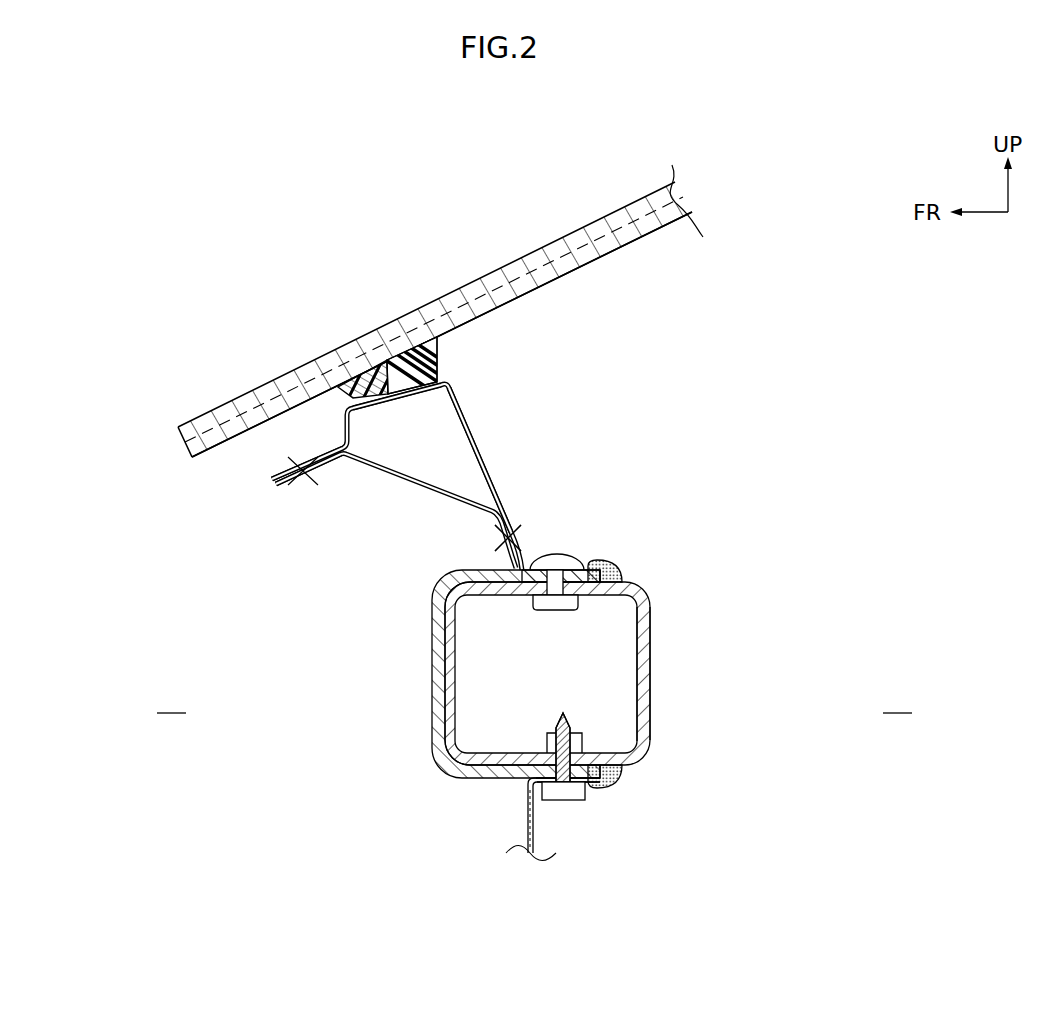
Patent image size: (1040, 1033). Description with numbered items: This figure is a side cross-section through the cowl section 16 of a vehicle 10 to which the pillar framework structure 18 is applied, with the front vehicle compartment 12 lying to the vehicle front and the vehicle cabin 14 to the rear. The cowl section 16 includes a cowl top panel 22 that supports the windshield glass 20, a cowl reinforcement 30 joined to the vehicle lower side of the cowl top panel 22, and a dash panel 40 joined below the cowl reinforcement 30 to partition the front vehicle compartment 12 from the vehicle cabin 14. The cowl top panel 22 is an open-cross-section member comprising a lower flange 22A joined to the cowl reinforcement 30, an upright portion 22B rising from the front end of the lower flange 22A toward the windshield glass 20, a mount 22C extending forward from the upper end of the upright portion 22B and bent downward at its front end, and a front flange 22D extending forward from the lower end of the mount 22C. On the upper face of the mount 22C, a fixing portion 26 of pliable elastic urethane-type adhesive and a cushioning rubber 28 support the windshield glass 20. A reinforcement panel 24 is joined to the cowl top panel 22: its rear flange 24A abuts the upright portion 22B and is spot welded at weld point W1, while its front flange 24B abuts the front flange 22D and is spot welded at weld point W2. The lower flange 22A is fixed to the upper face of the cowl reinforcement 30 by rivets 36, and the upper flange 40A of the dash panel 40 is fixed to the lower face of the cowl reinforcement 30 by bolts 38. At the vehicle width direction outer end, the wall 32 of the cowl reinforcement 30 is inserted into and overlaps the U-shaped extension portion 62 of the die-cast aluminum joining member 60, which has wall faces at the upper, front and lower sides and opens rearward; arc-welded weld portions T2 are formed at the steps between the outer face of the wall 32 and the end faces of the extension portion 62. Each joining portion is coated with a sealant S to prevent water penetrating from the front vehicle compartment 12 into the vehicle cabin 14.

The vehicle 10 is at (590, 187).
The front vehicle compartment 12 is at (171, 700).
The vehicle cabin 14 is at (897, 700).
The cowl section 16 is at (705, 418).
The pillar framework structure 18 is at (542, 223).
The windshield glass 20 is at (483, 283).
The cowl top panel 22 is at (503, 483).
The lower flange 22A is at (597, 557).
The upright portion 22B is at (473, 427).
The mount 22C is at (396, 404).
The front flange 22D is at (270, 468).
The reinforcement panel 24 is at (405, 486).
The rear flange 24A is at (500, 540).
The front flange 24B is at (295, 483).
The fixing portion 26 is at (338, 392).
The cushioning rubber 28 is at (425, 356).
The cowl reinforcement 30 is at (650, 640).
The wall 32 is at (650, 680).
The rivets 36 is at (556, 556).
The bolts 38 is at (563, 792).
The dash panel 40 is at (523, 832).
The upper flange 40A is at (552, 768).
The joining member 60 is at (449, 674).
The extension portion 62 is at (437, 673).
The sealant S is at (612, 563).
The weld portions T2 is at (622, 575).
The weld point W1 is at (520, 530).
The weld point W2 is at (303, 478).